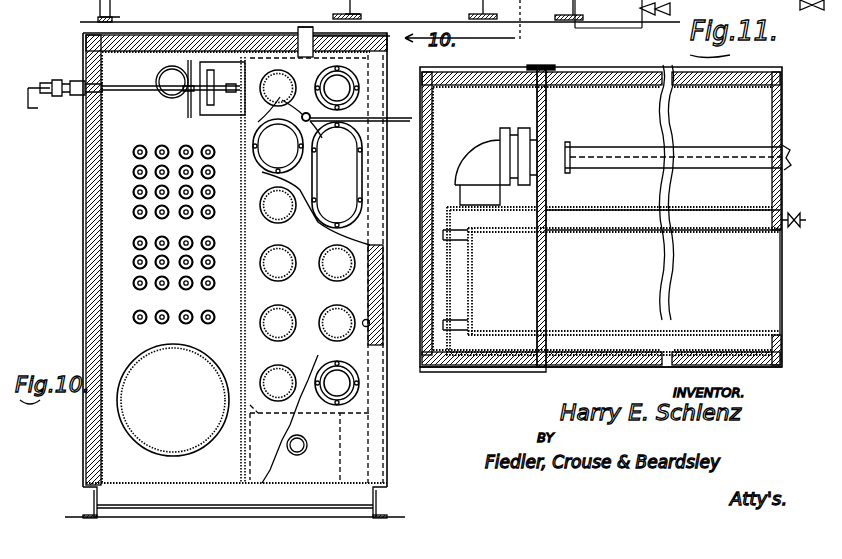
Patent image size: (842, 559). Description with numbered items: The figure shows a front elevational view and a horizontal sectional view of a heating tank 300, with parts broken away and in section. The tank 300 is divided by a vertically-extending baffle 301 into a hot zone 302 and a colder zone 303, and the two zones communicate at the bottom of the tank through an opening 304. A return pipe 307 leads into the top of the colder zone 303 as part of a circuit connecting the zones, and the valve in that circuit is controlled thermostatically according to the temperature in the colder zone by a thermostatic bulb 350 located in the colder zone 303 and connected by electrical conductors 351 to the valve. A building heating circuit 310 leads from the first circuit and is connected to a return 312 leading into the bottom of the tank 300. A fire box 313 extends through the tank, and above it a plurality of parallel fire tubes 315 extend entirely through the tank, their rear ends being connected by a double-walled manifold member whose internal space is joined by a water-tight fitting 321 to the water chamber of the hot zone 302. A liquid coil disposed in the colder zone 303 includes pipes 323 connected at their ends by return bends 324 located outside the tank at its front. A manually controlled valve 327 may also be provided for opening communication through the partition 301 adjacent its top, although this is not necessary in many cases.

In FIG. 10, the tank 300 is at (372, 326).
In FIG. 10, the baffle 301 is at (243, 334).
In FIG. 11, the baffle 301 is at (634, 212).
In FIG. 10, the hot zone 302 is at (112, 452).
In FIG. 11, the hot zone 302 is at (622, 345).
In FIG. 10, the colder zone 303 is at (350, 355).
In FIG. 11, the colder zone 303 is at (636, 85).
In FIG. 10, the opening 304 is at (243, 465).
In FIG. 10, the return pipe 307 is at (390, 36).
In FIG. 10, the building heating circuit 310 is at (308, 445).
In FIG. 11, the building heating circuit 310 is at (782, 190).
In FIG. 11, the return 312 is at (733, 148).
In FIG. 10, the fire box 313 is at (135, 415).
In FIG. 11, the fire box 313 is at (562, 360).
In FIG. 10, the fire tubes 315 is at (134, 256).
In FIG. 10, the water-tight fitting 321 is at (380, 182).
In FIG. 11, the water-tight fitting 321 is at (496, 166).
In FIG. 10, the pipes 323 is at (278, 121).
In FIG. 10, the return bends 324 is at (340, 165).
In FIG. 10, the manually controlled valve 327 is at (186, 110).
In FIG. 10, the thermostatic bulb 350 is at (316, 179).
In FIG. 10, the electrical conductors 351 is at (400, 115).